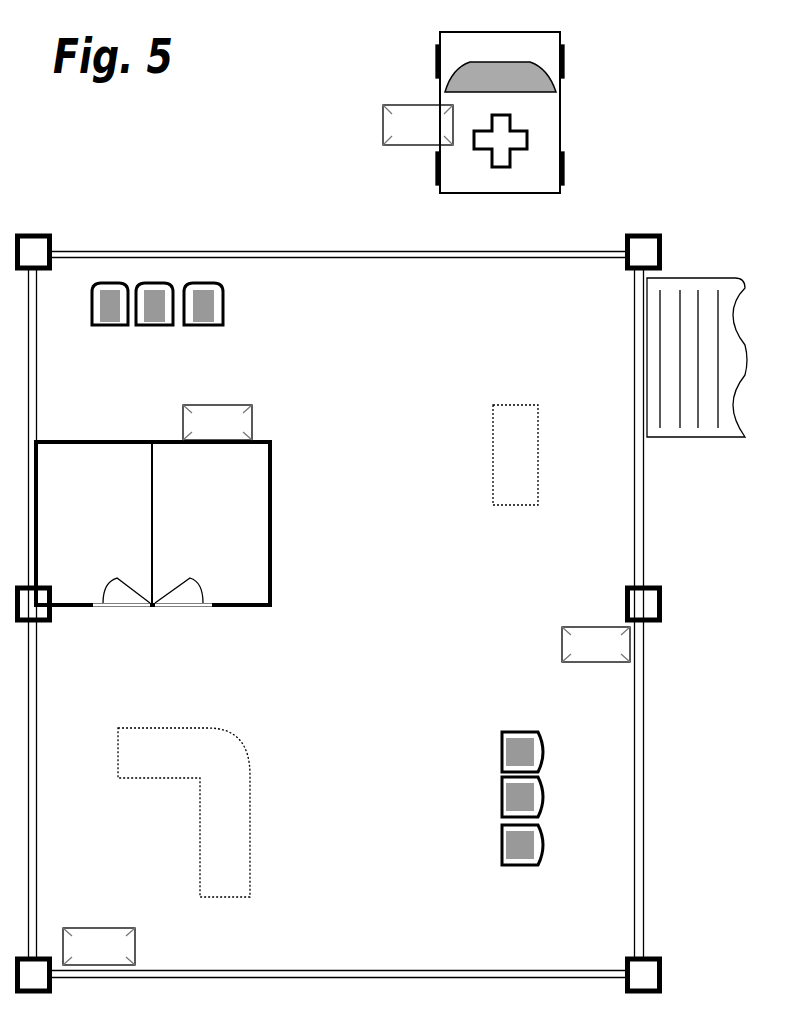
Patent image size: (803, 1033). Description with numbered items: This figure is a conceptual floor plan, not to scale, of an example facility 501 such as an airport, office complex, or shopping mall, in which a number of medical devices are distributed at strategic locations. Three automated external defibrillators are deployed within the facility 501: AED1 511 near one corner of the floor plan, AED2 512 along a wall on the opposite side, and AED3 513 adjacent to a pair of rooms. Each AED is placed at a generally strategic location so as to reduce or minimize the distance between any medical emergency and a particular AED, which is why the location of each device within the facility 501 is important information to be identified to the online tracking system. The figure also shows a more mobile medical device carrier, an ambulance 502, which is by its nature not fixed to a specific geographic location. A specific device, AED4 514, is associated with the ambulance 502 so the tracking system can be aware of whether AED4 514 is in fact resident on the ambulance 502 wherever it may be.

The facility 501 is at (200, 222).
The ambulance 502 is at (600, 104).
The AED1 511 is at (137, 951).
The AED2 512 is at (562, 643).
The AED3 513 is at (252, 426).
The AED4 514 is at (383, 129).